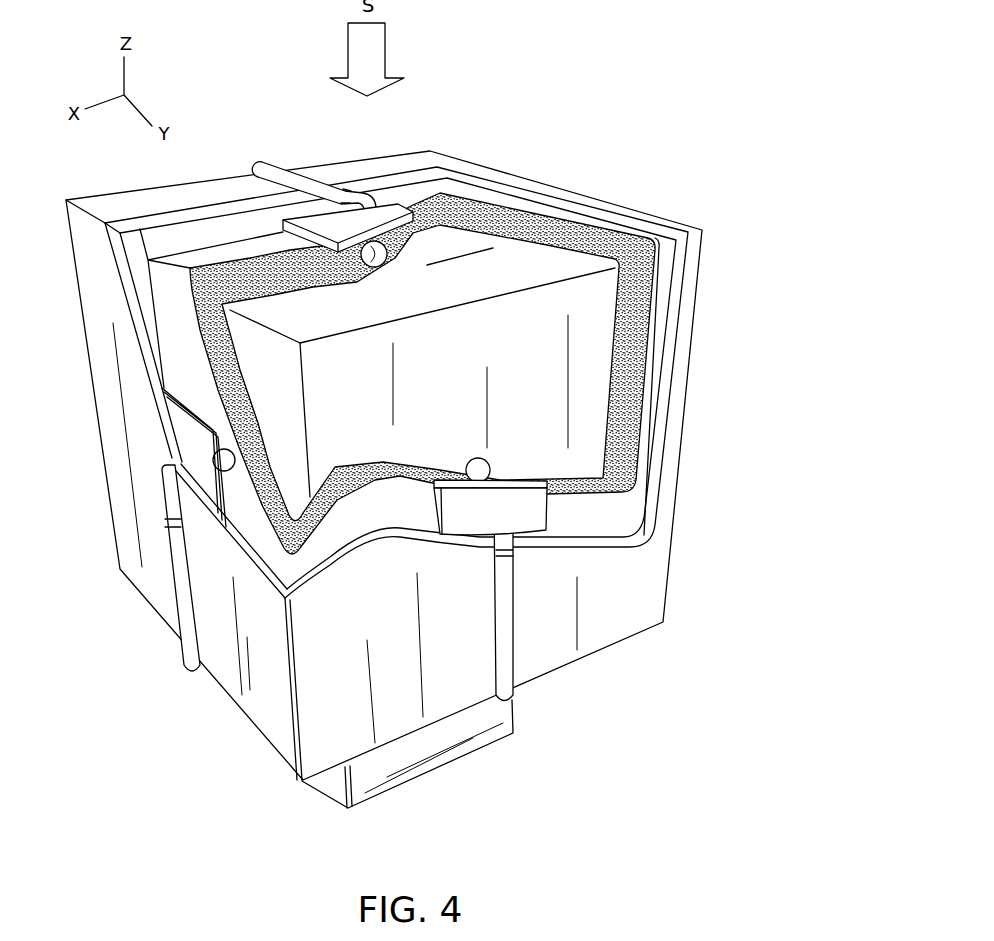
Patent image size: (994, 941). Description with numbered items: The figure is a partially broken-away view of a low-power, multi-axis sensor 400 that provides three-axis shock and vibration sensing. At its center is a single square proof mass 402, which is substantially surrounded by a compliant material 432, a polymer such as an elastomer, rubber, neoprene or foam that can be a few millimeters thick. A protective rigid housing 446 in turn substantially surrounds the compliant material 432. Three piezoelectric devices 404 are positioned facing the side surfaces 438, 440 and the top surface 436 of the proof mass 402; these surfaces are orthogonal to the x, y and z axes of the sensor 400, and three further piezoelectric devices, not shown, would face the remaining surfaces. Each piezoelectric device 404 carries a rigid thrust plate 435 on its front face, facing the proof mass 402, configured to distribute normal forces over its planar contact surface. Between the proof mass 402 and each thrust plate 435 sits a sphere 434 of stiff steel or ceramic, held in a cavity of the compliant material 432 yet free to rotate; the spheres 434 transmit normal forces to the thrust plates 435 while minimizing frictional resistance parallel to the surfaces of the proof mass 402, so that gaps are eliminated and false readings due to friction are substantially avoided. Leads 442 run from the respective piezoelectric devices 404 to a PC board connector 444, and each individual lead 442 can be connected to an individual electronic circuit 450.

The multi-axis sensor 400 is at (606, 72).
The proof mass 402 is at (583, 347).
The piezoelectric device 404 is at (383, 207).
The compliant material 432 is at (597, 255).
The sphere 434 is at (413, 212).
The thrust plate 435 is at (340, 252).
The top surface 436 is at (497, 270).
The side surface 438 is at (307, 423).
The side surface 440 is at (582, 398).
The lead 442 is at (258, 165).
The PC board connector 444 is at (475, 728).
The rigid housing 446 is at (636, 584).
The electronic circuit 450 is at (407, 754).